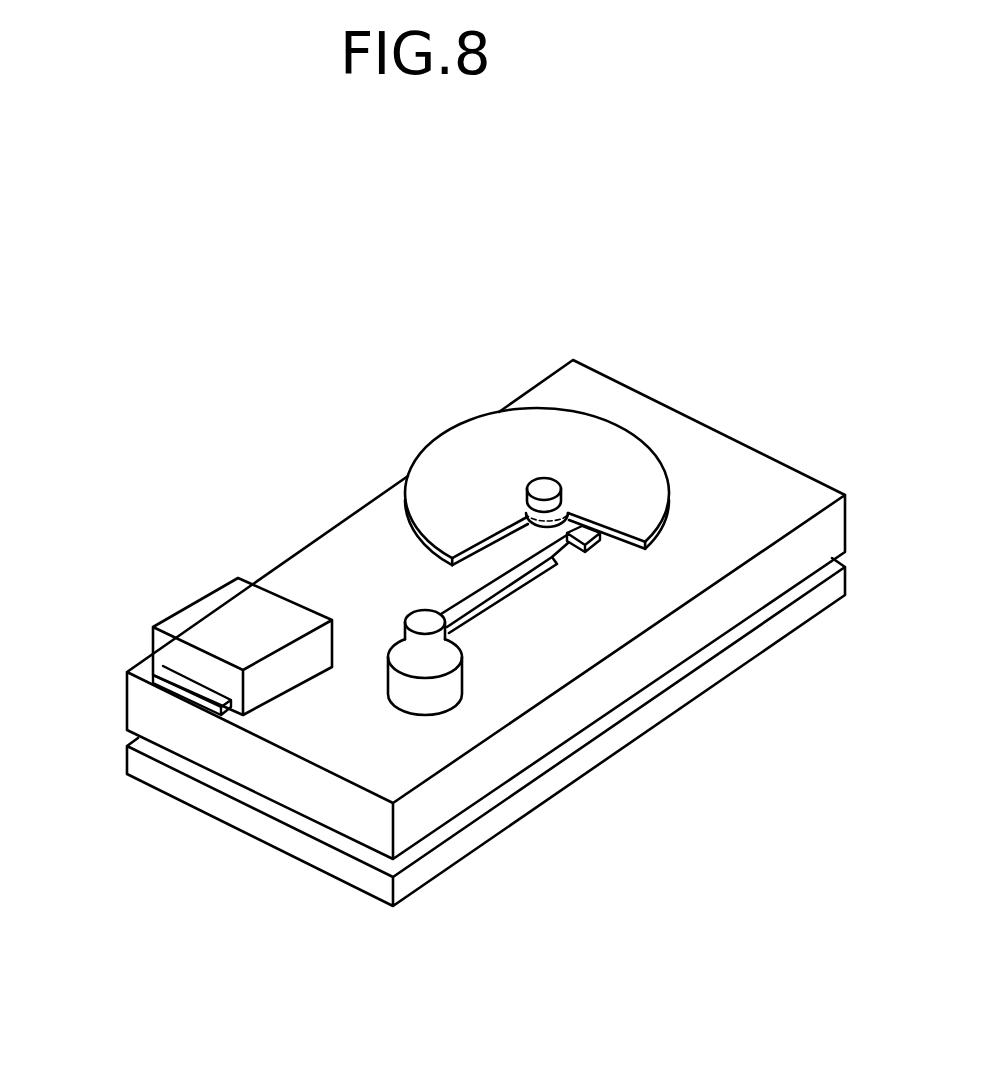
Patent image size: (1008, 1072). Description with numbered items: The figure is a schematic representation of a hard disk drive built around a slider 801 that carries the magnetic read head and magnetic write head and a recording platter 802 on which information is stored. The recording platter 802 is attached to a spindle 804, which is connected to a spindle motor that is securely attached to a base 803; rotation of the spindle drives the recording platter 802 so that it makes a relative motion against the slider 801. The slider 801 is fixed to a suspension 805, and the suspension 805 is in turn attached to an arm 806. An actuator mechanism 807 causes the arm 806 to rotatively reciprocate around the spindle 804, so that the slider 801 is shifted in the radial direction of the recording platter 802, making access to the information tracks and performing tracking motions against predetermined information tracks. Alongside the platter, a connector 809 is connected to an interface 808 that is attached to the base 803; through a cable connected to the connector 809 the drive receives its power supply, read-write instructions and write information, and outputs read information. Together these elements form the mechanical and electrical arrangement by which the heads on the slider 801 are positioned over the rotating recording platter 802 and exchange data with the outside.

The slider 801 is at (672, 595).
The recording platter 802 is at (573, 442).
The base 803 is at (755, 640).
The spindle 804 is at (541, 477).
The suspension 805 is at (562, 563).
The arm 806 is at (466, 607).
The actuator mechanism 807 is at (438, 692).
The interface 808 is at (238, 619).
The connector 809 is at (170, 688).